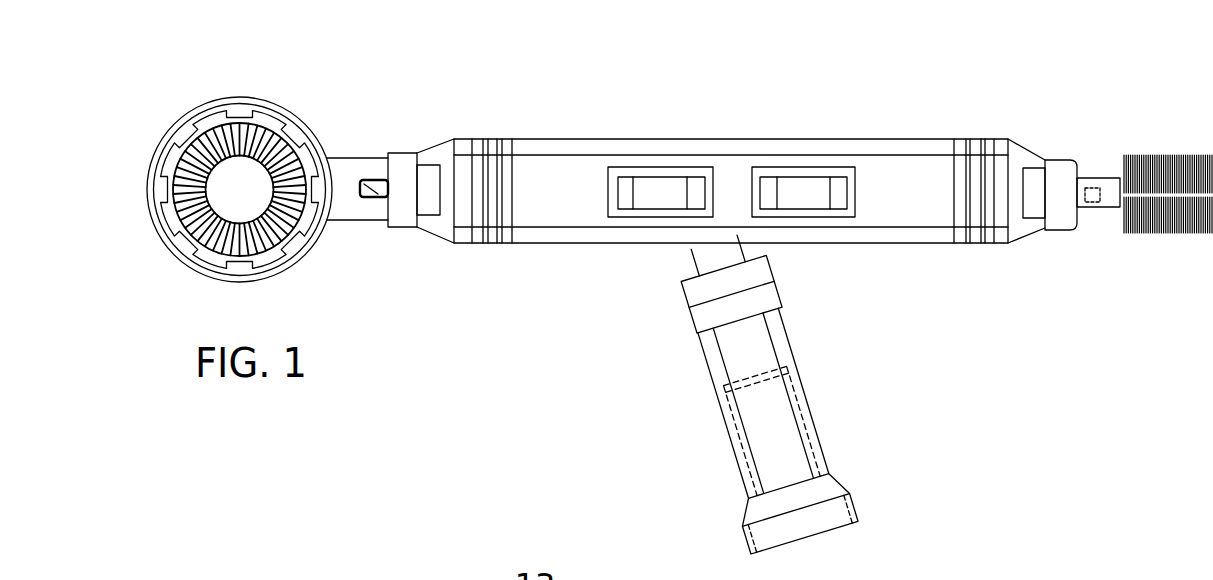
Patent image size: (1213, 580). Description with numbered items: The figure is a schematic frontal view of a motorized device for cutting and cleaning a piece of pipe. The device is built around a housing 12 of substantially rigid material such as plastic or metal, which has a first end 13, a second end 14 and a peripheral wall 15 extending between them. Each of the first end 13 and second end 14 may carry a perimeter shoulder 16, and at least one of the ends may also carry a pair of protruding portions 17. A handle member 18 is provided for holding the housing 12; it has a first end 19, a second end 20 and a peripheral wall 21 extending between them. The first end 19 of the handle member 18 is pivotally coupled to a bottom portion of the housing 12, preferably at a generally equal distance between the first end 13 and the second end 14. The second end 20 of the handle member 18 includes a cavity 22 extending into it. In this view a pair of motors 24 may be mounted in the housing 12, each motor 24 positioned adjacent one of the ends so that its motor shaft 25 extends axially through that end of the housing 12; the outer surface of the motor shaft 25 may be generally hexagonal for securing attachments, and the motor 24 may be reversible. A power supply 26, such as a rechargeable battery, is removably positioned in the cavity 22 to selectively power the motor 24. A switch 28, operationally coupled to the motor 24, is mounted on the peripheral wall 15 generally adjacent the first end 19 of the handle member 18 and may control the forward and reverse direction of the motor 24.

The housing 12 is at (672, 188).
The first end 13 is at (432, 153).
The second end 14 is at (1027, 153).
The peripheral wall 15 is at (880, 150).
The perimeter shoulder 16 is at (402, 217).
The protruding portions 17 is at (373, 185).
The handle member 18 is at (701, 350).
The first end 19 is at (695, 260).
The second end 20 is at (832, 530).
The peripheral wall 21 is at (742, 443).
The cavity 22 is at (792, 373).
The motor 24 is at (1033, 207).
The motor shaft 25 is at (1090, 195).
The power supply 26 is at (803, 437).
The switch 28 is at (652, 147).